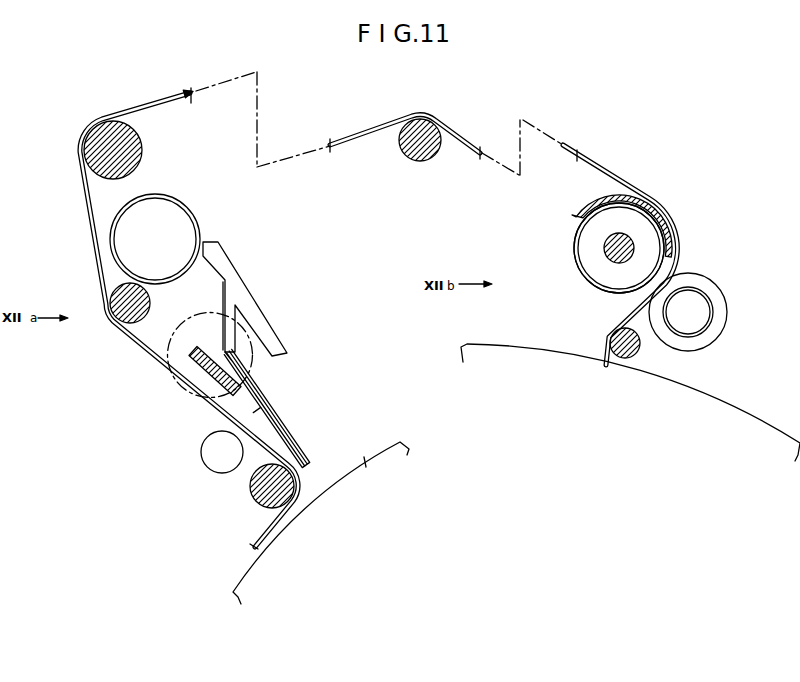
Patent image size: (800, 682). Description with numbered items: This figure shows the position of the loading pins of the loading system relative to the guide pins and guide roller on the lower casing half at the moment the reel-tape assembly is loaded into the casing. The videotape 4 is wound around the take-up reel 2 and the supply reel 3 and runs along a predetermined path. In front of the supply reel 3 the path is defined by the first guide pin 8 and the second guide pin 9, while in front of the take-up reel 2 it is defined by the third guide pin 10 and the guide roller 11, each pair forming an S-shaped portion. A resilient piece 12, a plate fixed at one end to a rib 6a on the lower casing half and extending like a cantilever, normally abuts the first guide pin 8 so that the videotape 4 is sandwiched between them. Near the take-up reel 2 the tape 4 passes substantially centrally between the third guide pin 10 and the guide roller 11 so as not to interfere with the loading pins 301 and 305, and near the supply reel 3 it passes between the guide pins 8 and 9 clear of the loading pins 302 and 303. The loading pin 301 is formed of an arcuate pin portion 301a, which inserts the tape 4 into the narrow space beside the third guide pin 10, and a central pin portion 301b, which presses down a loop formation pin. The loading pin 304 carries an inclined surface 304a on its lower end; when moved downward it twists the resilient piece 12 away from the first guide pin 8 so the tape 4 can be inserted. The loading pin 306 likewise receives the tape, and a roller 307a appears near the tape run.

The take-up reel 2 is at (749, 428).
The supply reel 3 is at (365, 459).
The videotape 4 is at (90, 207).
The rib 6a is at (231, 267).
The first guide pin 8 is at (211, 453).
The second guide pin 9 is at (200, 221).
The third guide pin 10 is at (590, 281).
The guide roller 11 is at (720, 305).
The resilient piece 12 is at (261, 408).
The loading pin 301 is at (551, 214).
The arcuate pin portion 301a is at (596, 198).
The central pin portion 301b is at (603, 249).
The loading pin 302 is at (144, 149).
The loading pin 303 is at (150, 305).
The loading pin 304 is at (246, 375).
The inclined surface 304a is at (250, 367).
The loading pin 305 is at (642, 355).
The loading pin 306 is at (262, 491).
The roller 307a is at (410, 155).